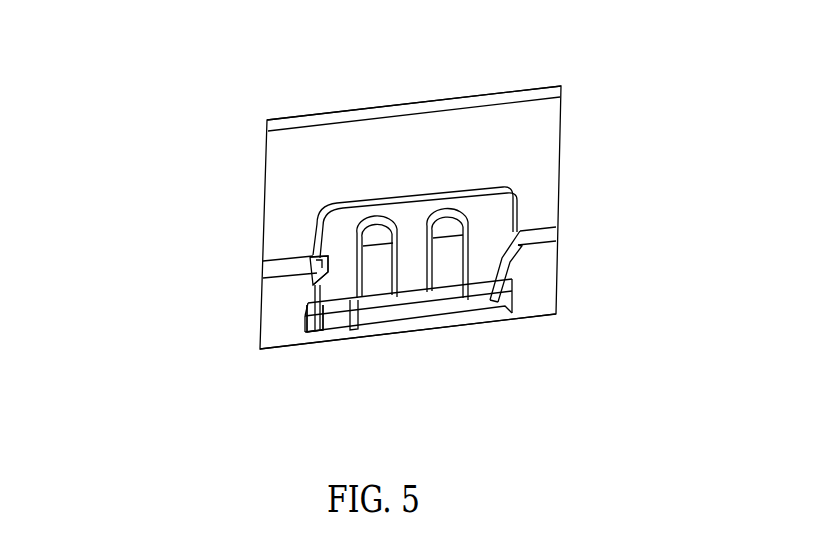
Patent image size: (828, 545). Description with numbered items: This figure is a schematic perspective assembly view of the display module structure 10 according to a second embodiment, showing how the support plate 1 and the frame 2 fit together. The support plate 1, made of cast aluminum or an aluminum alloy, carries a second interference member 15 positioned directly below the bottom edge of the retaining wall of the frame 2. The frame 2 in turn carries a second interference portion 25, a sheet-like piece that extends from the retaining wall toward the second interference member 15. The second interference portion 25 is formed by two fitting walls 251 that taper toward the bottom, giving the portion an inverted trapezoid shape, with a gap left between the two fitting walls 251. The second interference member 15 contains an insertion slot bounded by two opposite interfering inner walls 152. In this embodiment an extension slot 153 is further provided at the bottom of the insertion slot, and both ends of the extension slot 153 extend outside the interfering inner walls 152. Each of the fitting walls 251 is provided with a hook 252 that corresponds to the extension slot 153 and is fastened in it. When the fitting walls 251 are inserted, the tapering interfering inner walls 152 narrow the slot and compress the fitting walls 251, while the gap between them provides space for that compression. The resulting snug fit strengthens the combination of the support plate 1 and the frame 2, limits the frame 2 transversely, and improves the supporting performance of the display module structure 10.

The display module structure 10 is at (631, 56).
The frame 2 is at (564, 122).
The support plate 1 is at (558, 286).
The second interference member 15 is at (138, 294).
The second interference portion 25 is at (140, 252).
The fitting walls 251 is at (327, 282).
The interfering inner walls 152 is at (315, 298).
The extension slot 153 is at (307, 311).
The hook 252 is at (320, 330).